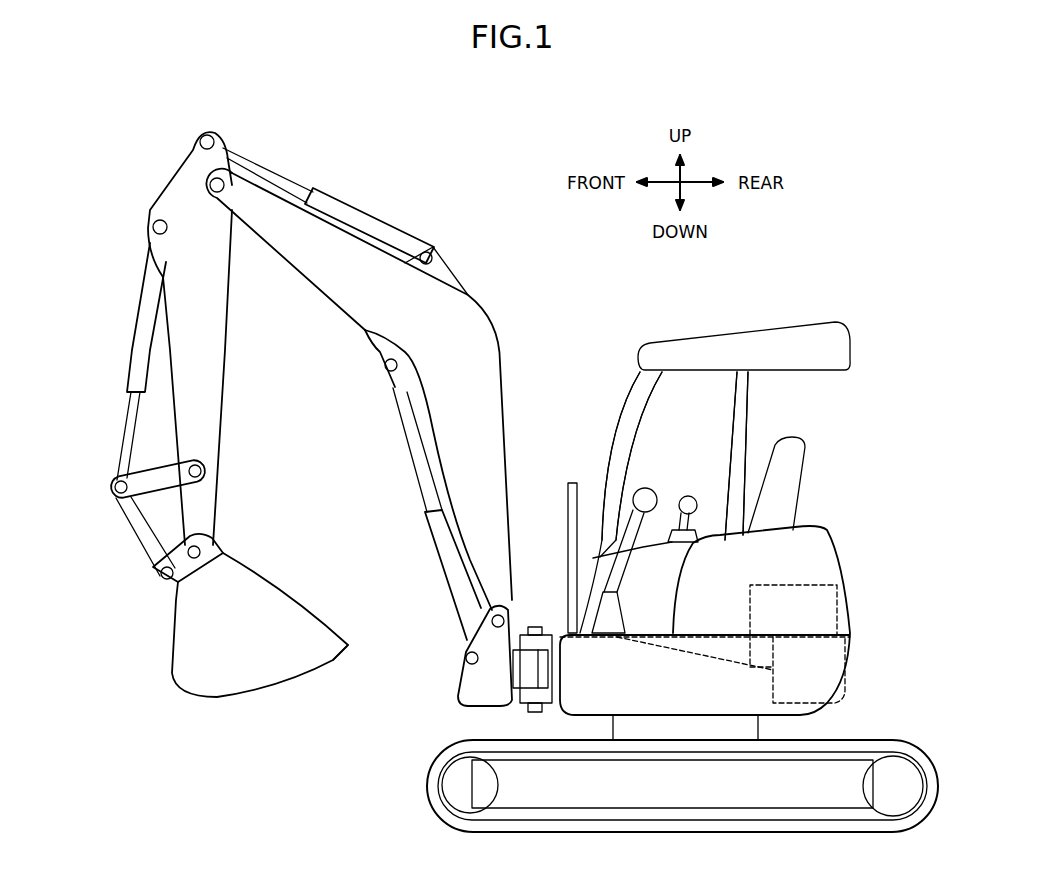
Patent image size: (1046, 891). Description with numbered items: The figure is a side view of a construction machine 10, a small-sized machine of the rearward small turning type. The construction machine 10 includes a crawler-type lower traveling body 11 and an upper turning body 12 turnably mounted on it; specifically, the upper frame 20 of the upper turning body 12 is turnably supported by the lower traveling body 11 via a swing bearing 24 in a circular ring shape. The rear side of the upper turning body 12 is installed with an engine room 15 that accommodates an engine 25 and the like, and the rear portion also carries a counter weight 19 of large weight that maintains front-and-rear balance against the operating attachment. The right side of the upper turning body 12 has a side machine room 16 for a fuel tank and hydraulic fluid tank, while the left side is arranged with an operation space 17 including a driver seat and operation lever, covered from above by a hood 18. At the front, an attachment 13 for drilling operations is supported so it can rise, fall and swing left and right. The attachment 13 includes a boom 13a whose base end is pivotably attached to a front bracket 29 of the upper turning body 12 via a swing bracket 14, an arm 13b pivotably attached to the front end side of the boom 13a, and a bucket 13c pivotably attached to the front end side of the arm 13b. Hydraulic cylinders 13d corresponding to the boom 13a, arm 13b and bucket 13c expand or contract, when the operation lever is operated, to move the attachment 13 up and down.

The construction machine 10 is at (833, 250).
The lower traveling body 11 is at (428, 788).
The upper turning body 12 is at (840, 512).
The attachment 13 is at (452, 245).
The boom 13a is at (490, 333).
The arm 13b is at (215, 320).
The bucket 13c is at (253, 682).
The hydraulic cylinders 13d is at (367, 227).
The swing bracket 14 is at (463, 683).
The engine room 15 is at (833, 562).
The side machine room 16 is at (670, 533).
The operation space 17 is at (765, 428).
The hood 18 is at (840, 345).
The counter weight 19 is at (845, 653).
The upper frame 20 is at (840, 675).
The swing bearing 24 is at (750, 732).
The engine 25 is at (847, 603).
The front bracket 29 is at (547, 637).